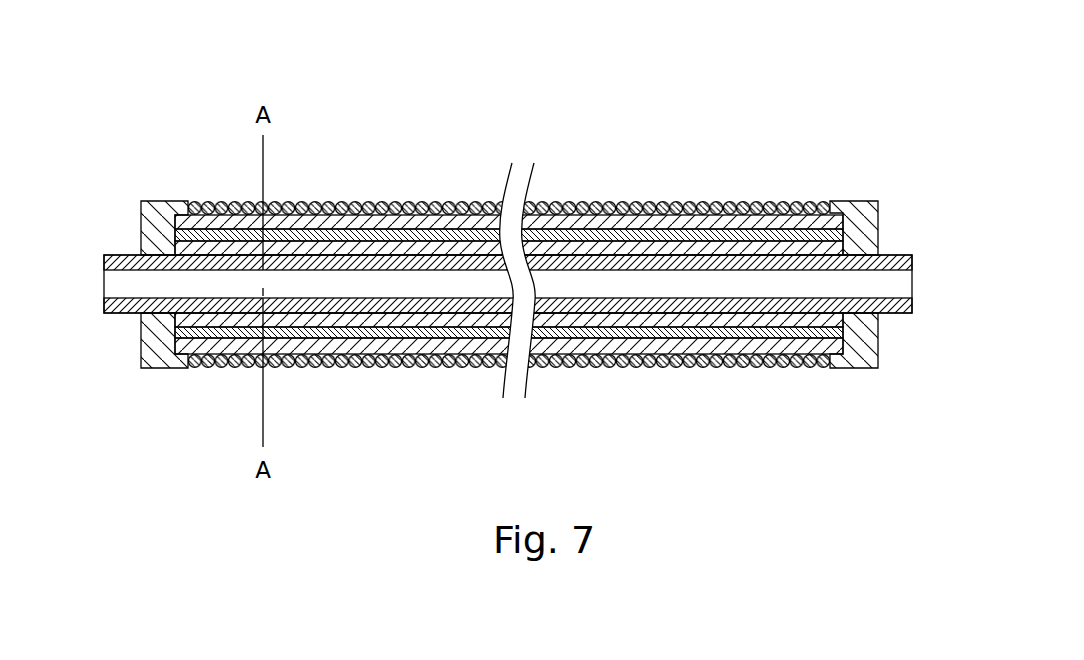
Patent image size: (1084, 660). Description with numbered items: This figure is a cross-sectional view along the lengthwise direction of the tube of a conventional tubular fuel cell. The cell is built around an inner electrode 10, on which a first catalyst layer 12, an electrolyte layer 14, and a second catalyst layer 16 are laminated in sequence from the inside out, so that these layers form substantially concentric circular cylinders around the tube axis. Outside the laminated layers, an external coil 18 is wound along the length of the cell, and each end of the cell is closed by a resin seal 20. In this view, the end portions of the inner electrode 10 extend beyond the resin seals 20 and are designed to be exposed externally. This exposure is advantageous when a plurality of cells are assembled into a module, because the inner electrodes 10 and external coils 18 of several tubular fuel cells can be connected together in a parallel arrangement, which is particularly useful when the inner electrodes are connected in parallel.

The inner electrode 10 is at (470, 263).
The first catalyst layer 12 is at (437, 248).
The electrolyte layer 14 is at (396, 236).
The second catalyst layer 16 is at (322, 222).
The external coil 18 is at (610, 200).
The resin seal 20 is at (141, 232).